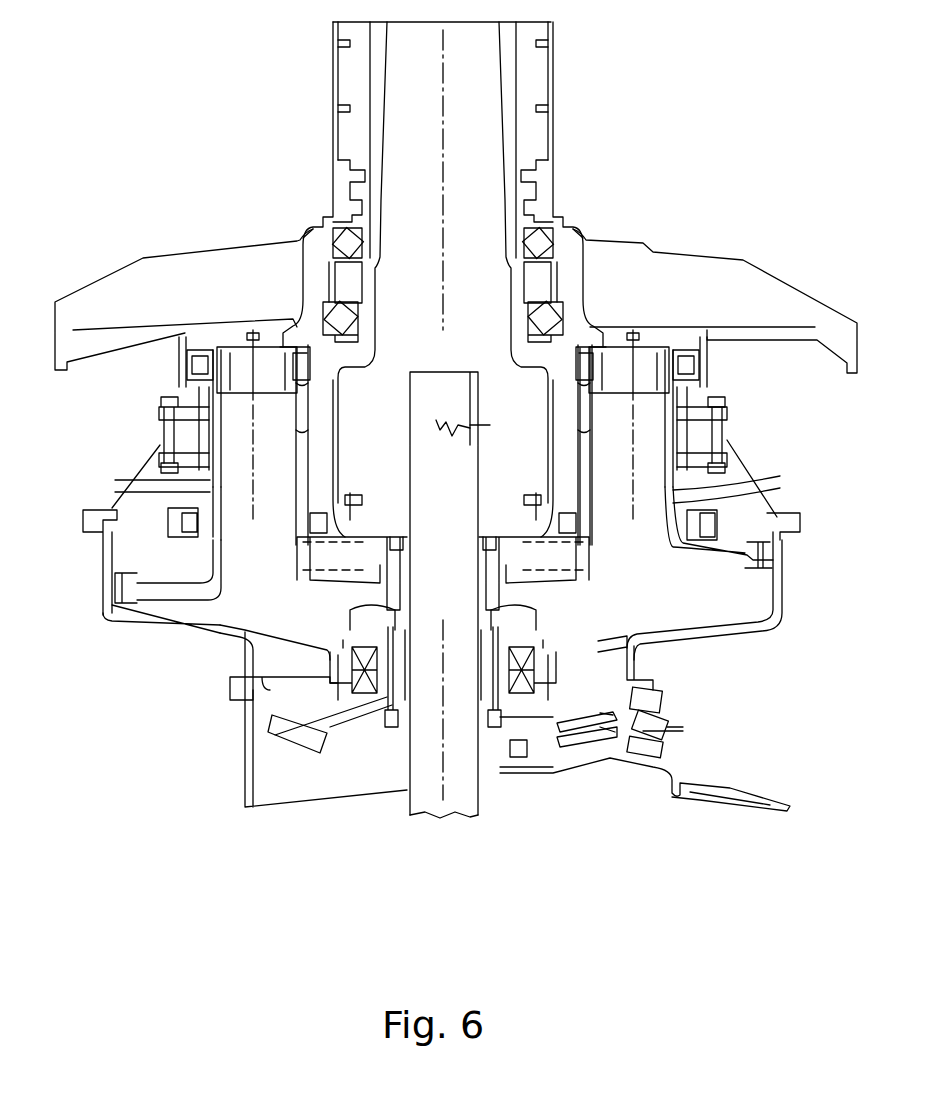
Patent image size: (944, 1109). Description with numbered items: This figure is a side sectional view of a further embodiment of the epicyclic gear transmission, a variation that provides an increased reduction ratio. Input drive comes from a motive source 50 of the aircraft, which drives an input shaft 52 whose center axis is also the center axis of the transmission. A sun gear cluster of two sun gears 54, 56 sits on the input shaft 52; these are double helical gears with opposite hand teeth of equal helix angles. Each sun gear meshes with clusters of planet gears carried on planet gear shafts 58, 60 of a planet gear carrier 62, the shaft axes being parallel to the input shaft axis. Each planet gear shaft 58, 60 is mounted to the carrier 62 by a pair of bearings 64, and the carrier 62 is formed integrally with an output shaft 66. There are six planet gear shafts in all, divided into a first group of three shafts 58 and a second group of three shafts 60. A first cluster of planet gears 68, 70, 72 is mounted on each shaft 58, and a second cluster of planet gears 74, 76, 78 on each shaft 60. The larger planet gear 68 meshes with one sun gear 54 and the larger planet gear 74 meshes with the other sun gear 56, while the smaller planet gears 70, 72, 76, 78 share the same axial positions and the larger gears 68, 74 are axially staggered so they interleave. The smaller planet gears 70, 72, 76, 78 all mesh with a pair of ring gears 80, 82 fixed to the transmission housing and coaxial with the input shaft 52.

The motive source 50 is at (624, 805).
The input shaft 52 is at (373, 575).
The sun gear 54 is at (495, 594).
The sun gear 56 is at (393, 557).
The planet gear shaft 58 is at (210, 490).
The planet gear shaft 60 is at (673, 495).
The planet gear carrier 62 is at (563, 345).
The bearings 64 is at (212, 363).
The output shaft 66 is at (522, 128).
The larger planet gear 68 is at (115, 585).
The smaller planet gear 70 is at (210, 483).
The smaller planet gear 72 is at (205, 400).
The larger planet gear 74 is at (762, 555).
The smaller planet gear 76 is at (687, 480).
The smaller planet gear 78 is at (683, 418).
The ring gear 80 is at (195, 455).
The ring gear 82 is at (195, 418).